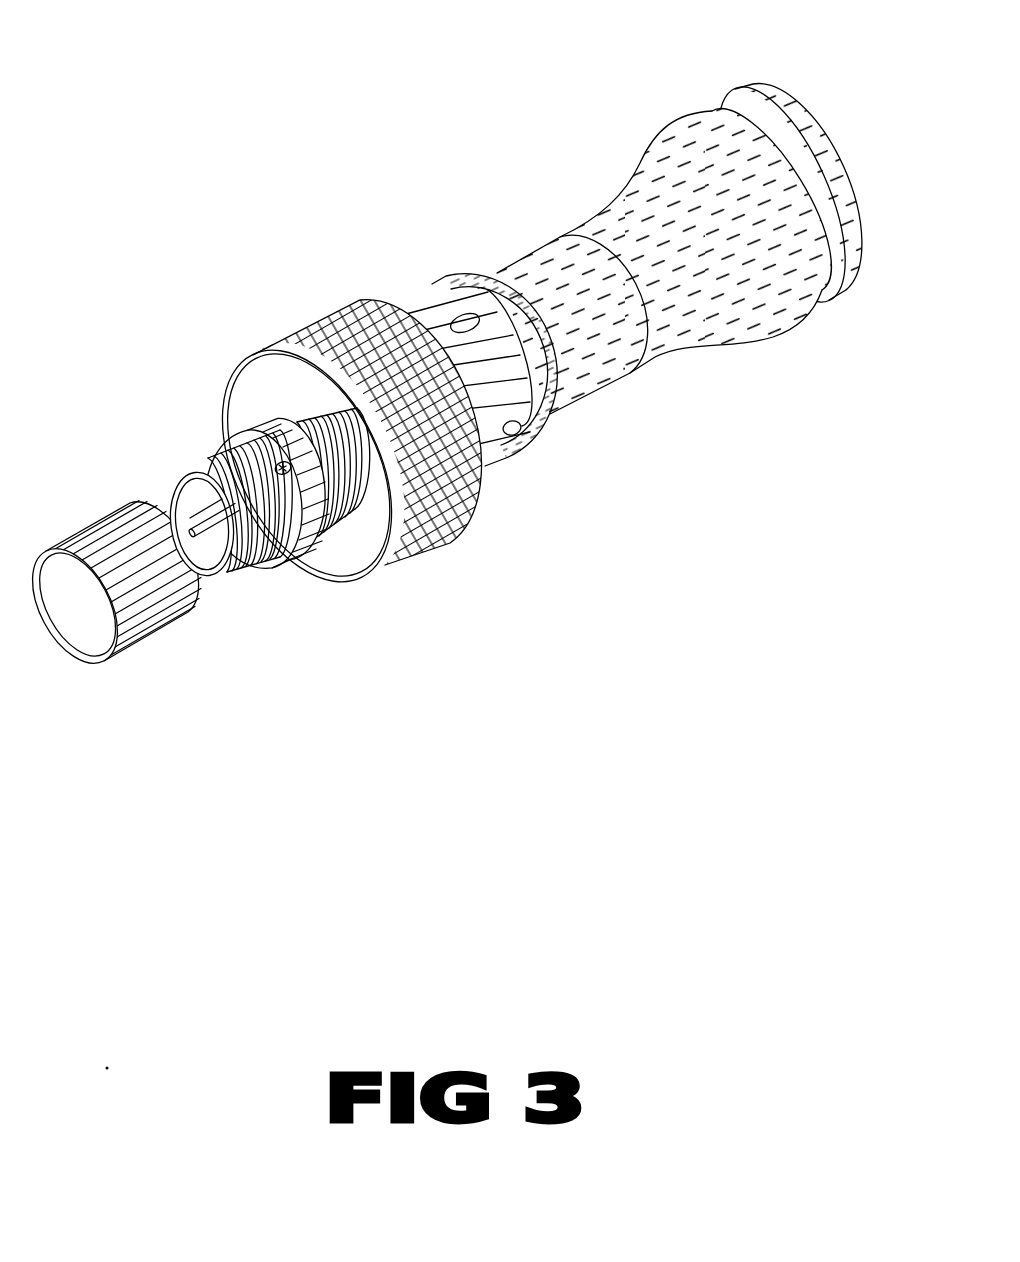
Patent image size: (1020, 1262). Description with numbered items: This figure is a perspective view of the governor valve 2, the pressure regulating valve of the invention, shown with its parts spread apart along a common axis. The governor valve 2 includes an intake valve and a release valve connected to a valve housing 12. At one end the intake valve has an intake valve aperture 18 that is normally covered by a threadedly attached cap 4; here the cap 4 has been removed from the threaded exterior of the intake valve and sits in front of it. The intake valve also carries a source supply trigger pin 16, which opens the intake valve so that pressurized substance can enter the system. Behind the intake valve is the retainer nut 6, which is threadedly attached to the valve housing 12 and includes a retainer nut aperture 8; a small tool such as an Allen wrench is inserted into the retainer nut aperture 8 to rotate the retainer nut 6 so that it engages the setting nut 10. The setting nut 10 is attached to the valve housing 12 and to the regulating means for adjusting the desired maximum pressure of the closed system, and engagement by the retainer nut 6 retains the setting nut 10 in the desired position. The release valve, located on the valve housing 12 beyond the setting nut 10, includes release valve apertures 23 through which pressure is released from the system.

The governor valve 2 is at (814, 58).
The cap 4 is at (85, 527).
The retainer nut 6 is at (286, 568).
The retainer nut aperture 8 is at (278, 463).
The setting nut 10 is at (443, 538).
The valve housing 12 is at (722, 347).
The source supply trigger pin 16 is at (173, 494).
The intake valve aperture 18 is at (217, 553).
The release valve apertures 23 is at (462, 316).